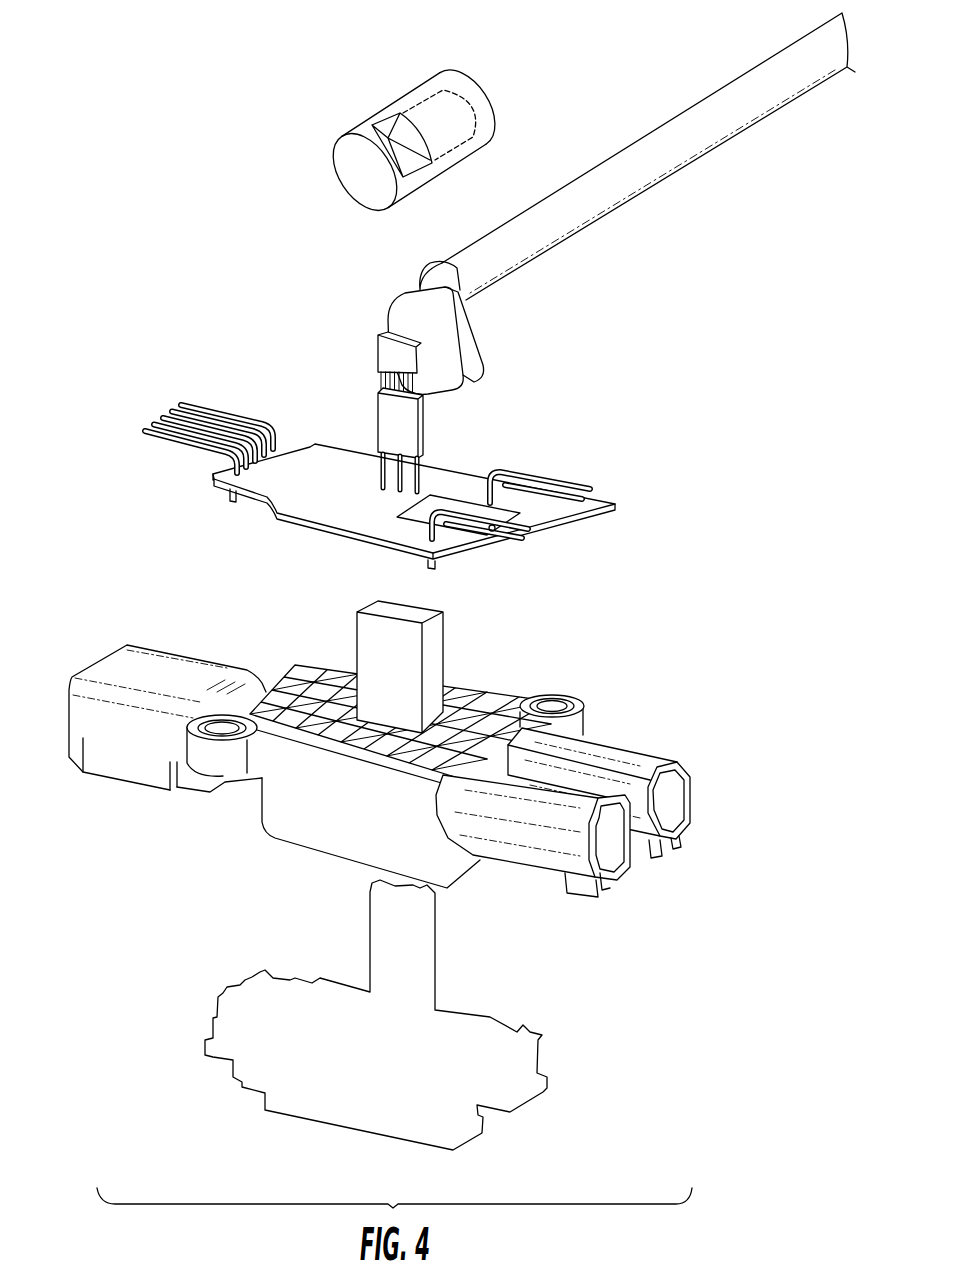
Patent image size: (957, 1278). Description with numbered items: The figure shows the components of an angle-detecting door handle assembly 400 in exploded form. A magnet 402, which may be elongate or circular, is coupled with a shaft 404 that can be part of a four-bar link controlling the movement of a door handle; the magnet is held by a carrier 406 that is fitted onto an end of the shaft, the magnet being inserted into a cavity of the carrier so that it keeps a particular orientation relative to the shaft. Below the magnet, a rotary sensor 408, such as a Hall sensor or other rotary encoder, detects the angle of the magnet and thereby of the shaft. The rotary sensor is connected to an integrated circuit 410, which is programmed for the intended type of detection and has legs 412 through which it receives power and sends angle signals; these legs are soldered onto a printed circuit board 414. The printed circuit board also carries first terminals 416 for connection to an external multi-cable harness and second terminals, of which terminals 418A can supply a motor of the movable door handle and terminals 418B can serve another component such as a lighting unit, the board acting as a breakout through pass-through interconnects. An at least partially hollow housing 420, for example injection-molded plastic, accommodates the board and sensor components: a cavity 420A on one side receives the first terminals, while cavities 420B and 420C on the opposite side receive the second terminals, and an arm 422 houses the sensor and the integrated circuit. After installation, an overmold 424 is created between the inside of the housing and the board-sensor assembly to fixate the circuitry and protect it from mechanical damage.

The angle-detecting door handle assembly 400 is at (700, 330).
The magnet 402 is at (482, 355).
The shaft 404 is at (611, 218).
The carrier 406 is at (400, 100).
The rotary sensor 408 is at (378, 347).
The integrated circuit (IC) 410 is at (378, 412).
The legs 412 is at (418, 470).
The printed circuit board (PCB) 414 is at (337, 540).
The first terminals 416 is at (170, 440).
The terminals 418A is at (530, 525).
The terminals 418B is at (565, 480).
The housing 420 is at (268, 828).
The cavity 420A is at (177, 667).
The cavity 420B is at (541, 872).
The cavity 420C is at (607, 742).
The arm 422 is at (357, 635).
The overmold 424 is at (305, 985).